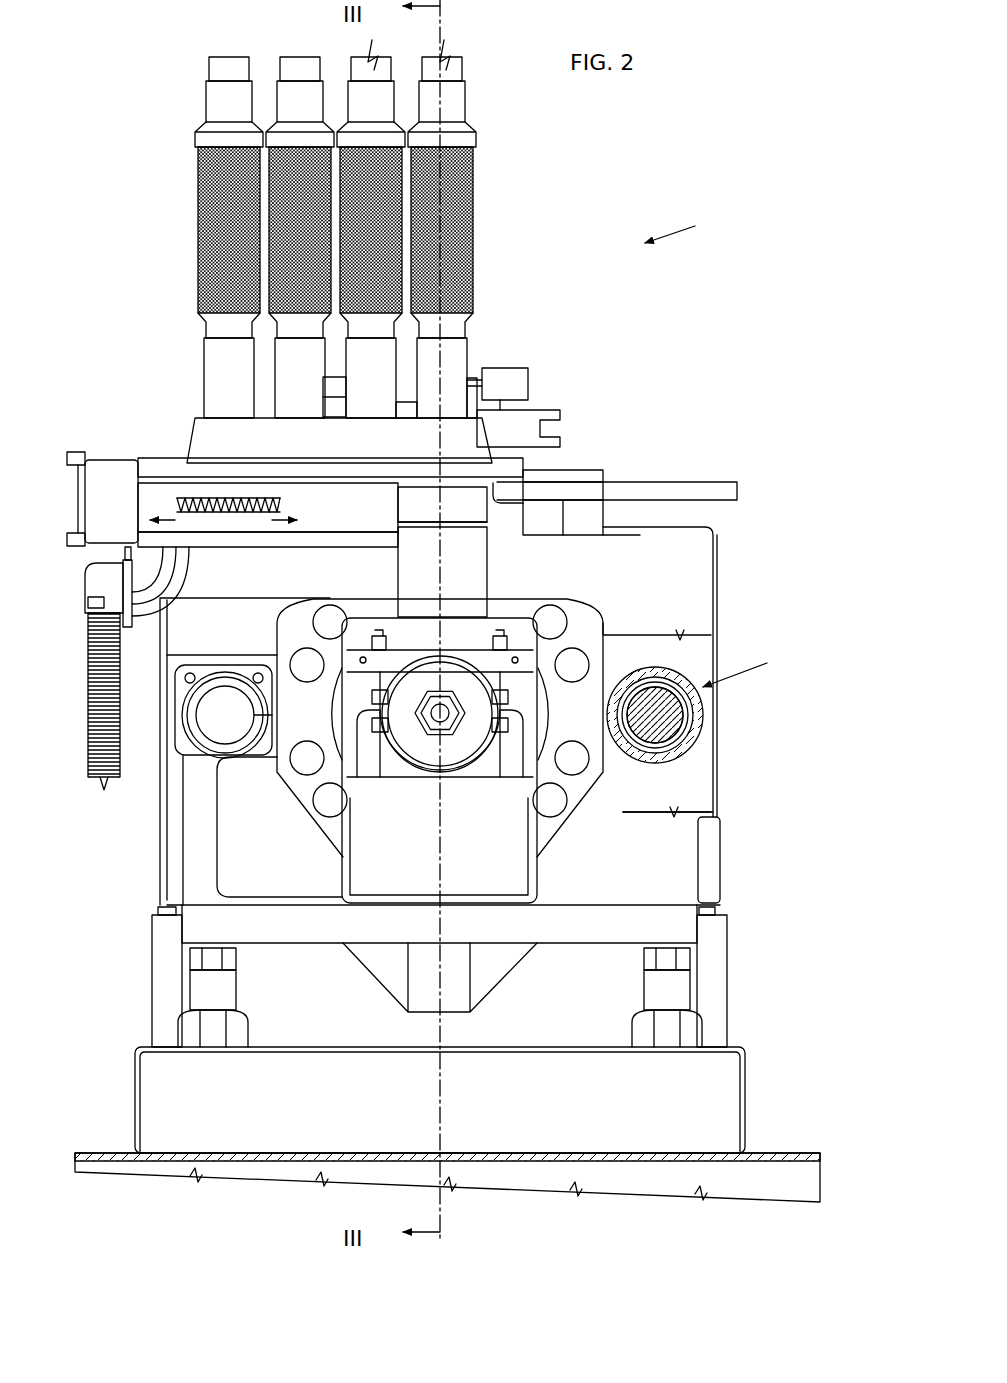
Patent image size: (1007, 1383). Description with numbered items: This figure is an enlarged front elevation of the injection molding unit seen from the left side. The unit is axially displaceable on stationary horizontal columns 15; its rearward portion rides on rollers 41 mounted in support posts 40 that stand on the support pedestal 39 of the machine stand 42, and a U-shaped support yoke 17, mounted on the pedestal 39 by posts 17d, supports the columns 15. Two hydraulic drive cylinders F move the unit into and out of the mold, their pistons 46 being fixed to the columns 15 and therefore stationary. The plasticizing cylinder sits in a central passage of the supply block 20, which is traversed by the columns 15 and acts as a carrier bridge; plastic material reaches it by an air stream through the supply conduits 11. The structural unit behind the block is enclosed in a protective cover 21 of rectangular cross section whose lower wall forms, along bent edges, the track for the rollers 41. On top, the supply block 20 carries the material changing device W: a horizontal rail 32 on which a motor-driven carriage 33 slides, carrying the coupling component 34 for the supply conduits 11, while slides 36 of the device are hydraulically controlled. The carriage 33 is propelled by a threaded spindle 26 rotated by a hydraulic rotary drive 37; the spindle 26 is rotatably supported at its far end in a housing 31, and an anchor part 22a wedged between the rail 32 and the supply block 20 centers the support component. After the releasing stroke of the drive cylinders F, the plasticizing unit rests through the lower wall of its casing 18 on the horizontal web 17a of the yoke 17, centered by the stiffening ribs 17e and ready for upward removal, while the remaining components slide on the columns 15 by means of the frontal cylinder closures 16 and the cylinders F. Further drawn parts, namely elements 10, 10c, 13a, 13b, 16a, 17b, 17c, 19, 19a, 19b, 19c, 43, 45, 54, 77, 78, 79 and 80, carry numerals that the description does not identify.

The filter cartridge 10 is at (482, 222).
The filter element 10c is at (463, 202).
The supply conduits 11 is at (300, 68).
The rotary shaft 13a is at (415, 742).
The shaft nut 13b is at (443, 713).
The horizontal columns 15 is at (222, 707).
The frontal cylinder closures 16 is at (205, 670).
The bolt hole 16a is at (263, 662).
The support yoke 17 is at (307, 947).
The horizontal web 17a is at (577, 928).
The frame pocket 17b is at (207, 837).
The frame wall 17c is at (203, 742).
The posts 17d is at (210, 987).
The stiffening ribs 17e is at (628, 863).
The cover 18 is at (340, 858).
The support column 19 is at (478, 636).
The mounting flange 19a is at (547, 620).
The tie rod 19b is at (380, 673).
The fastening bolt 19c is at (380, 633).
The supply block 20 is at (605, 650).
The protective cover 21 is at (712, 793).
The anchor part 22a is at (562, 523).
The threaded spindle 26 is at (213, 493).
The housing 31 is at (113, 492).
The horizontal rail 32 is at (683, 490).
The carriage 33 is at (515, 494).
The coupling component 34 is at (245, 432).
The slides 36 is at (420, 478).
The hydraulic rotary drive 37 is at (493, 525).
The support pedestal 39 is at (743, 1107).
The support posts 40 is at (168, 948).
The rollers 41 is at (177, 911).
The machine stand 42 is at (598, 1183).
The flange bolt hole 43 is at (570, 613).
The outer bearing race 45 is at (697, 700).
The pistons 46 is at (683, 718).
The cartridge connector 54 is at (445, 377).
The sensor block 77 is at (108, 585).
The sensor bar 78 is at (95, 640).
The cable 79 is at (192, 588).
The mounting plate 80 is at (129, 607).
The hydraulic drive cylinders F is at (744, 671).
The material changing device W is at (678, 222).